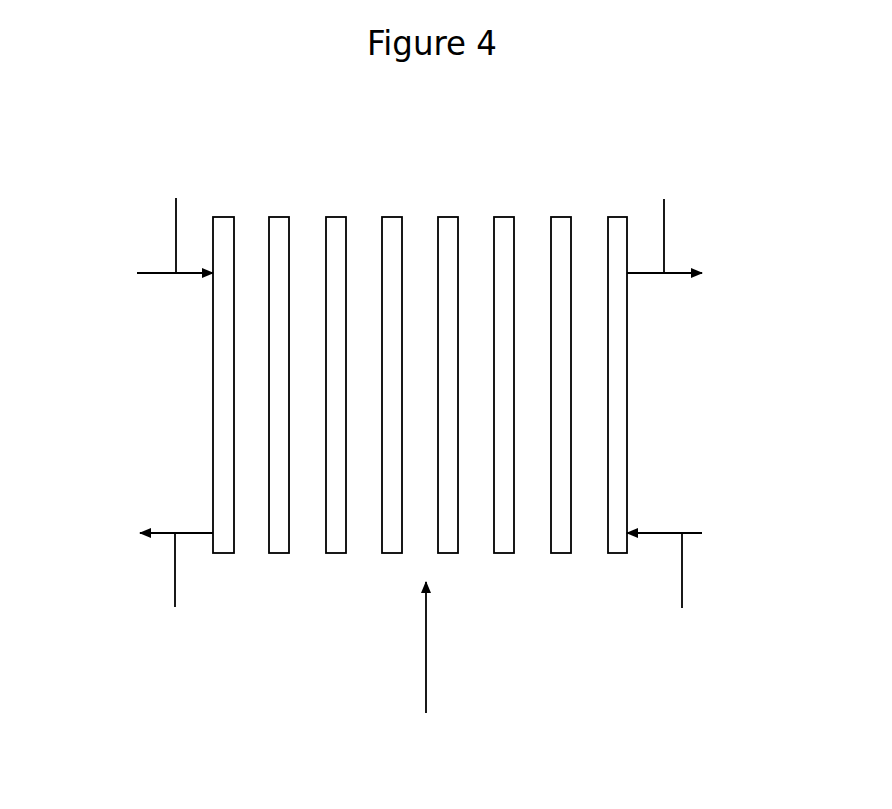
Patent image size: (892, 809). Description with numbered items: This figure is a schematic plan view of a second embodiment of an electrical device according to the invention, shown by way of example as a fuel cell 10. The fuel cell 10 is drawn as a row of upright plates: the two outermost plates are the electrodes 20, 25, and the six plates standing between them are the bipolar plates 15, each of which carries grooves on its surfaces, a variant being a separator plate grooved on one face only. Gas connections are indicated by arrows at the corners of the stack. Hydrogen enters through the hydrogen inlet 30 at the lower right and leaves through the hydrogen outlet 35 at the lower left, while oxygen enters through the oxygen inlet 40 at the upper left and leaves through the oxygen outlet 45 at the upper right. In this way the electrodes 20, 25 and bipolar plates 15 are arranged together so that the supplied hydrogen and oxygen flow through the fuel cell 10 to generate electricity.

The fuel cell 10 is at (427, 674).
The bipolar plates 15 is at (571, 217).
The electrode 20 is at (214, 553).
The electrode 25 is at (608, 553).
The hydrogen inlet 30 is at (665, 598).
The hydrogen outlet 35 is at (176, 598).
The oxygen inlet 40 is at (175, 213).
The oxygen outlet 45 is at (664, 213).